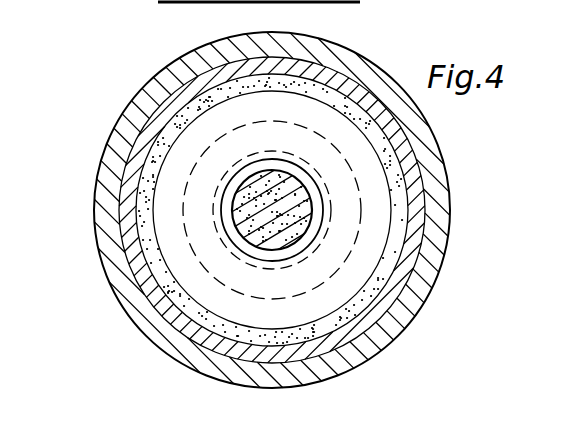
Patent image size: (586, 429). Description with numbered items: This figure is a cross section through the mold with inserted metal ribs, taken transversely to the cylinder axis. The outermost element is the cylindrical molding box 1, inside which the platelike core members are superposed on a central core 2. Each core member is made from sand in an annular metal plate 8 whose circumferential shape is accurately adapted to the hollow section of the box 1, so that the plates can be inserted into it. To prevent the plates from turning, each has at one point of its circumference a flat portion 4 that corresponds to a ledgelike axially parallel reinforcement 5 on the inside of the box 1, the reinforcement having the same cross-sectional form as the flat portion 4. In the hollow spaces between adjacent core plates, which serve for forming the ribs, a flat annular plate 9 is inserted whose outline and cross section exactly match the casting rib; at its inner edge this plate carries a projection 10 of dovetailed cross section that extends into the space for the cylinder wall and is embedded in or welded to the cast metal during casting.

The cylindrical molding box 1 is at (428, 193).
The core 2 is at (137, 192).
The flat portion 4 is at (167, 112).
The ledgelike axially parallel reinforcement 5 is at (162, 70).
The annular metal plate 8 is at (160, 307).
The flat annular plate 9 is at (180, 248).
The projection 10 is at (315, 242).